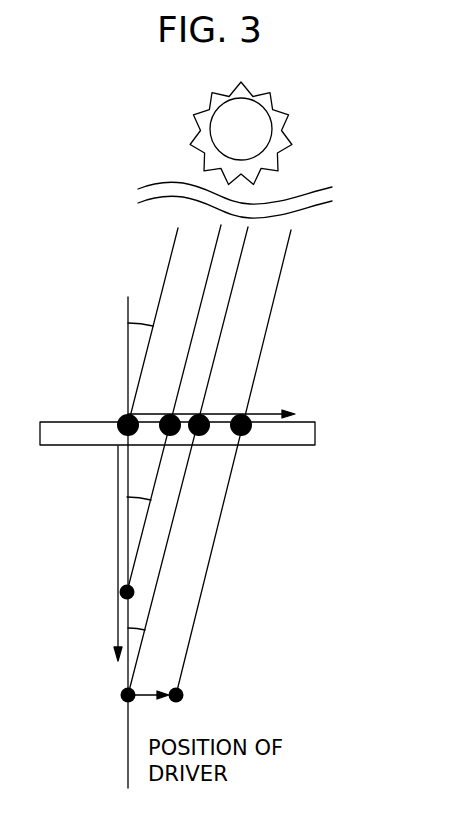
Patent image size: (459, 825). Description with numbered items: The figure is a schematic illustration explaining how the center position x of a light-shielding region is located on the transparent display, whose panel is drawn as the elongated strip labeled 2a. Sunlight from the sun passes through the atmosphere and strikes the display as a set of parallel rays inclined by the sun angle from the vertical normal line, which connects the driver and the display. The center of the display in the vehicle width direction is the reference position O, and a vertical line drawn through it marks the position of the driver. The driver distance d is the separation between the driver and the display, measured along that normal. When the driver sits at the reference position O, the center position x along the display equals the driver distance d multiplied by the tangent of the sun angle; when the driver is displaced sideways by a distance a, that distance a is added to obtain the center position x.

The light control panel 2a is at (316, 433).
The center position x is at (211, 400).
The reference position O is at (128, 765).
The driver distance d is at (112, 553).
The distance a is at (156, 708).